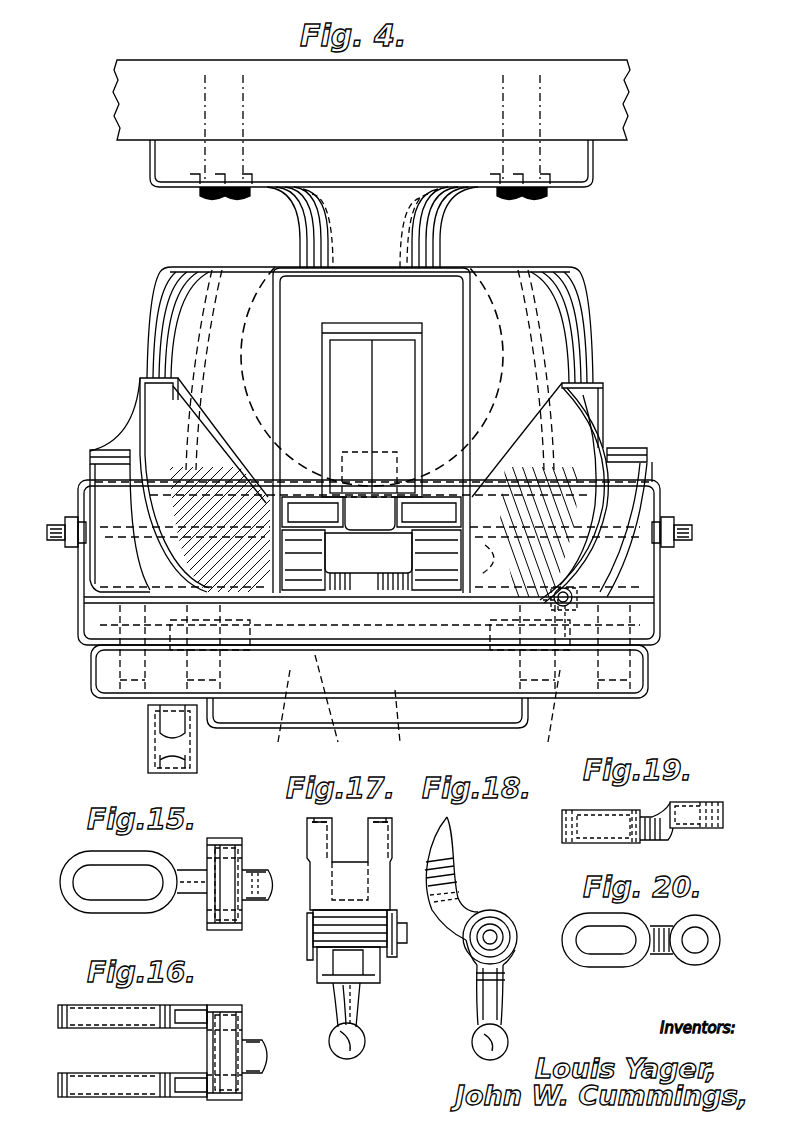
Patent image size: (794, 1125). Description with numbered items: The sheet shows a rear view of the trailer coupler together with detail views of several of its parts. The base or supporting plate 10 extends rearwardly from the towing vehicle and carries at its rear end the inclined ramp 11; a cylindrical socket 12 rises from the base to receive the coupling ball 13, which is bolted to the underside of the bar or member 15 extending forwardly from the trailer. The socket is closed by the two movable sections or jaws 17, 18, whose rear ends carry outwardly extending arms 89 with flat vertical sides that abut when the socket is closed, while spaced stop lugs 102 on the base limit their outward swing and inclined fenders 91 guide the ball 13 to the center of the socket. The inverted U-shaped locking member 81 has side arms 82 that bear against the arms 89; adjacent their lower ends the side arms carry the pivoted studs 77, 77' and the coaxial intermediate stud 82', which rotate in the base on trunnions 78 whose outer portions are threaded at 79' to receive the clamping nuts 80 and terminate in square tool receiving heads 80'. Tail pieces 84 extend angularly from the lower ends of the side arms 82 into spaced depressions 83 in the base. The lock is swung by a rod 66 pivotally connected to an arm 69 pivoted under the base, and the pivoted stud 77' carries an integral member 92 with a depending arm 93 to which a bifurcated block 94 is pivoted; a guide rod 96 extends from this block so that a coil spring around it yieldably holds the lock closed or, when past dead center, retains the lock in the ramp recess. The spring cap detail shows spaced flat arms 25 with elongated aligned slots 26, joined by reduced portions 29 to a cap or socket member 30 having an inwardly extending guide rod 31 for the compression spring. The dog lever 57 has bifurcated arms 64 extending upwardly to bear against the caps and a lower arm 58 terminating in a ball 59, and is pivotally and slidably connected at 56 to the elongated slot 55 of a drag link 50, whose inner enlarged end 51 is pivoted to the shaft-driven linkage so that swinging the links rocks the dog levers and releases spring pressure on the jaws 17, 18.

In FIG. 4, the bar or member 15 is at (605, 112).
In FIG. 4, the coupling ball 13 is at (440, 258).
In FIG. 4, the cylindrical socket 12 is at (282, 265).
In FIG. 4, the movable section or jaw 18 is at (196, 282).
In FIG. 4, the movable section or jaw 17 is at (550, 282).
In FIG. 4, the locking member 81 is at (287, 320).
In FIG. 4, the outwardly extending arms 89 is at (395, 369).
In FIG. 4, the side arms 82 is at (364, 376).
In FIG. 4, the intermediate stud or rod 82' is at (370, 513).
In FIG. 4, the inclined fenders 91 is at (596, 438).
In FIG. 4, the stop lugs 102 is at (635, 449).
In FIG. 4, the trunnions or pintles 78 is at (657, 500).
In FIG. 4, the threaded portion 79' is at (376, 516).
In FIG. 4, the square tool receiving head 80' is at (368, 538).
In FIG. 4, the clamping nuts 80 is at (369, 551).
In FIG. 4, the pivoted stud 77 is at (200, 489).
In FIG. 4, the pivoted stud 77' is at (490, 566).
In FIG. 4, the integral member 92 is at (568, 468).
In FIG. 4, the base or supporting plate 10 is at (82, 617).
In FIG. 4, the inclined ramp 11 is at (105, 668).
In FIG. 4, the arm 69 is at (170, 715).
In FIG. 4, the rod 66 is at (178, 773).
In FIG. 4, the depressions 83 is at (411, 715).
In FIG. 4, the tail pieces 84 is at (364, 707).
In FIG. 4, the depending arm 93 is at (560, 612).
In FIG. 4, the bifurcated block 94 is at (580, 606).
In FIG. 4, the guide rod 96 is at (572, 618).
In FIG. 15, the spaced flat arms 25 is at (100, 903).
In FIG. 16, the spaced flat arms 25 is at (62, 1090).
In FIG. 15, the elongated aligned slots 26 is at (94, 866).
In FIG. 16, the elongated aligned slots 26 is at (75, 1020).
In FIG. 15, the reduced portions 29 is at (195, 895).
In FIG. 16, the reduced portions 29 is at (190, 1078).
In FIG. 15, the cap or socket member 30 is at (243, 848).
In FIG. 16, the cap or socket member 30 is at (243, 1015).
In FIG. 15, the guide rod 31 is at (252, 900).
In FIG. 16, the guide rod 31 is at (252, 1073).
In FIG. 17, the bifurcated arms 64 is at (375, 847).
In FIG. 18, the bifurcated arms 64 is at (450, 845).
In FIG. 17, the dog lever 57 is at (372, 900).
In FIG. 18, the dog lever 57 is at (478, 904).
In FIG. 17, the pivotal and slidable connection 56 is at (404, 940).
In FIG. 18, the pivotal and slidable connection 56 is at (505, 928).
In FIG. 17, the lower arm 58 is at (352, 1000).
In FIG. 18, the lower arm 58 is at (496, 992).
In FIG. 17, the ball 59 is at (345, 1059).
In FIG. 18, the ball 59 is at (498, 1040).
In FIG. 19, the elongated slot 55 is at (575, 838).
In FIG. 20, the elongated slot 55 is at (612, 955).
In FIG. 19, the drag links 50 is at (660, 838).
In FIG. 20, the drag links 50 is at (665, 958).
In FIG. 19, the inner enlarged end 51 is at (703, 828).
In FIG. 20, the inner enlarged end 51 is at (703, 960).